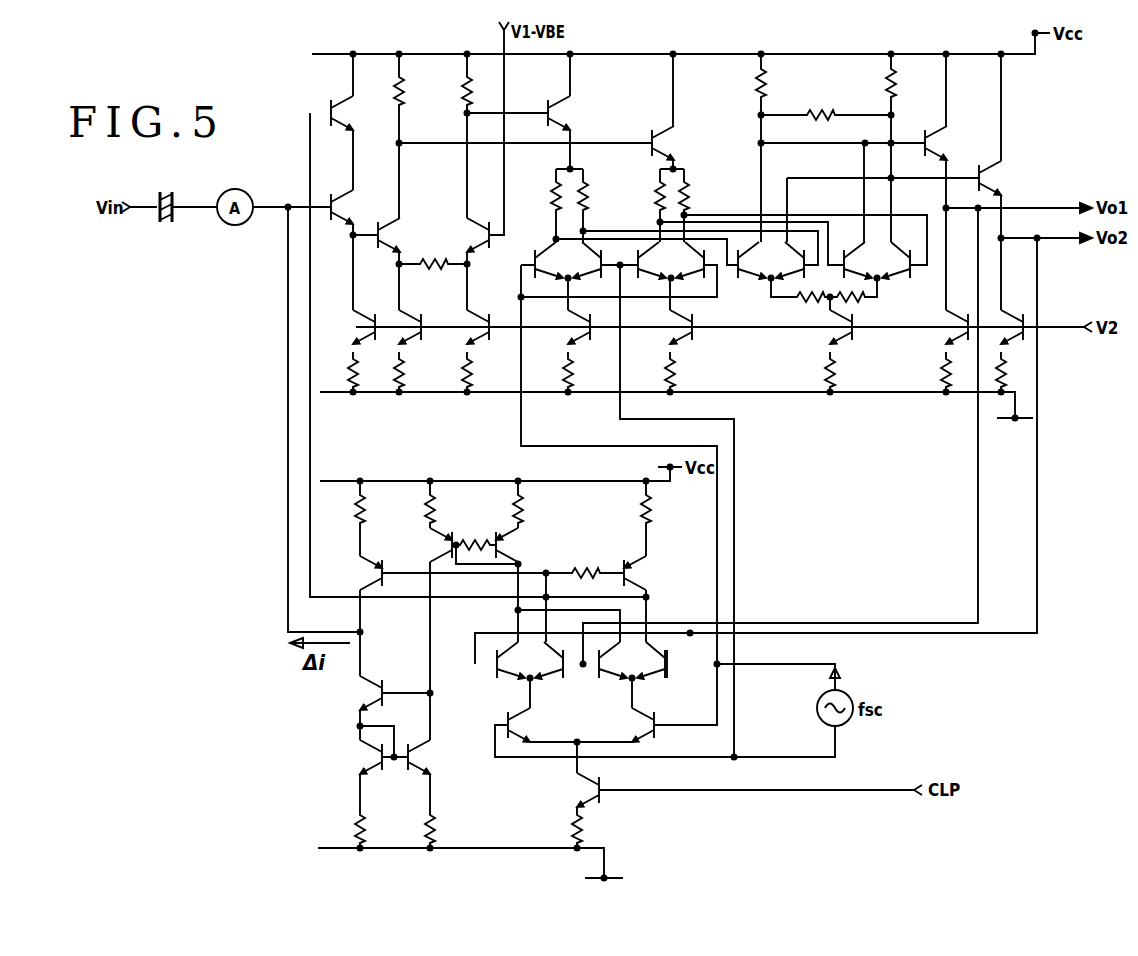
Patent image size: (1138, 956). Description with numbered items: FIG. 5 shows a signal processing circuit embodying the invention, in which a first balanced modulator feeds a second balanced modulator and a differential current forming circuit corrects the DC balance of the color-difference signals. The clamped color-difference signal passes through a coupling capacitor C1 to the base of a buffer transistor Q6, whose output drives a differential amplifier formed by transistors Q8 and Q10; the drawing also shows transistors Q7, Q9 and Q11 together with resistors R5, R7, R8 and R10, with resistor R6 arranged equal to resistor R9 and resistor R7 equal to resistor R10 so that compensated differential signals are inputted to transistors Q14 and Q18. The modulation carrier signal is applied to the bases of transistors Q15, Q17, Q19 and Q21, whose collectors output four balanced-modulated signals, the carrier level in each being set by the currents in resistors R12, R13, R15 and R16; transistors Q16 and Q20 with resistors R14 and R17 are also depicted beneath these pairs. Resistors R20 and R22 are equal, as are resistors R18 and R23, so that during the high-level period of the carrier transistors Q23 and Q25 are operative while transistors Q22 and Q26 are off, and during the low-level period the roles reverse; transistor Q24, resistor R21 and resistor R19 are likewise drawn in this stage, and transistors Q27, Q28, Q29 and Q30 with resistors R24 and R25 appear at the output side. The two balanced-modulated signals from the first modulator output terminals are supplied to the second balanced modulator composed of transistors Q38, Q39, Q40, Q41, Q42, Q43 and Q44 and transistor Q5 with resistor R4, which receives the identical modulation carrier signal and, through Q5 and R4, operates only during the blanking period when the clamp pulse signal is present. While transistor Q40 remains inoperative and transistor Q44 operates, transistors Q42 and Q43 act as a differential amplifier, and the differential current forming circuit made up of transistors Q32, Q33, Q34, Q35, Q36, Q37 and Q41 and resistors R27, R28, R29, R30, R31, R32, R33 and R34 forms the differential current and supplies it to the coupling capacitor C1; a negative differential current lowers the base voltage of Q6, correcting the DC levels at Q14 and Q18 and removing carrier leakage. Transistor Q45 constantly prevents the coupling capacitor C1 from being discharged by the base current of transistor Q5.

The coupling capacitor C1 is at (166, 221).
The transistor Q45 is at (363, 113).
The transistor Q6 is at (356, 207).
The transistor Q7 is at (367, 317).
The transistor Q8 is at (400, 203).
The transistor Q9 is at (413, 317).
The transistor Q10 is at (487, 230).
The transistor Q11 is at (486, 317).
The transistor Q14 is at (580, 113).
The transistor Q15 is at (536, 248).
The transistor Q16 is at (596, 335).
The transistor Q17 is at (600, 282).
The transistor Q18 is at (683, 143).
The transistor Q19 is at (644, 282).
The transistor Q20 is at (699, 335).
The transistor Q21 is at (705, 282).
The transistor Q22 is at (740, 286).
The transistor Q23 is at (801, 248).
The transistor Q24 is at (825, 330).
The transistor Q25 is at (871, 255).
The transistor Q26 is at (912, 253).
The transistor Q27 is at (956, 143).
The transistor Q28 is at (1010, 178).
The transistor Q29 is at (966, 317).
The transistor Q30 is at (1021, 317).
The transistor Q32 is at (356, 573).
The transistor Q33 is at (382, 682).
The transistor Q34 is at (357, 757).
The transistor Q35 is at (438, 757).
The transistor Q36 is at (427, 545).
The transistor Q37 is at (528, 545).
The transistor Q38 is at (522, 671).
The transistor Q39 is at (566, 675).
The transistor Q40 is at (533, 725).
The transistor Q41 is at (655, 573).
The transistor Q42 is at (626, 671).
The transistor Q43 is at (674, 675).
The transistor Q44 is at (663, 730).
The transistor Q5 is at (603, 790).
The resistor R4 is at (564, 827).
The resistor R5 is at (366, 372).
The resistor R6 is at (413, 98).
The resistor R7 is at (412, 372).
The resistor R8 is at (433, 251).
The resistor R9 is at (481, 136).
The resistor R10 is at (486, 372).
The resistor R12 is at (542, 204).
The resistor R13 is at (603, 200).
The resistor R14 is at (553, 372).
The resistor R15 is at (649, 195).
The resistor R16 is at (704, 192).
The resistor R17 is at (655, 372).
The resistor R18 is at (747, 78).
The resistor R19 is at (826, 104).
The resistor R20 is at (811, 309).
The resistor R21 is at (850, 372).
The resistor R22 is at (859, 309).
The resistor R23 is at (911, 78).
The resistor R24 is at (931, 372).
The resistor R25 is at (1020, 372).
The resistor R27 is at (346, 518).
The resistor R28 is at (345, 811).
The resistor R29 is at (415, 504).
The resistor R30 is at (450, 811).
The resistor R31 is at (475, 532).
The resistor R32 is at (538, 504).
The resistor R33 is at (585, 561).
The resistor R34 is at (631, 518).